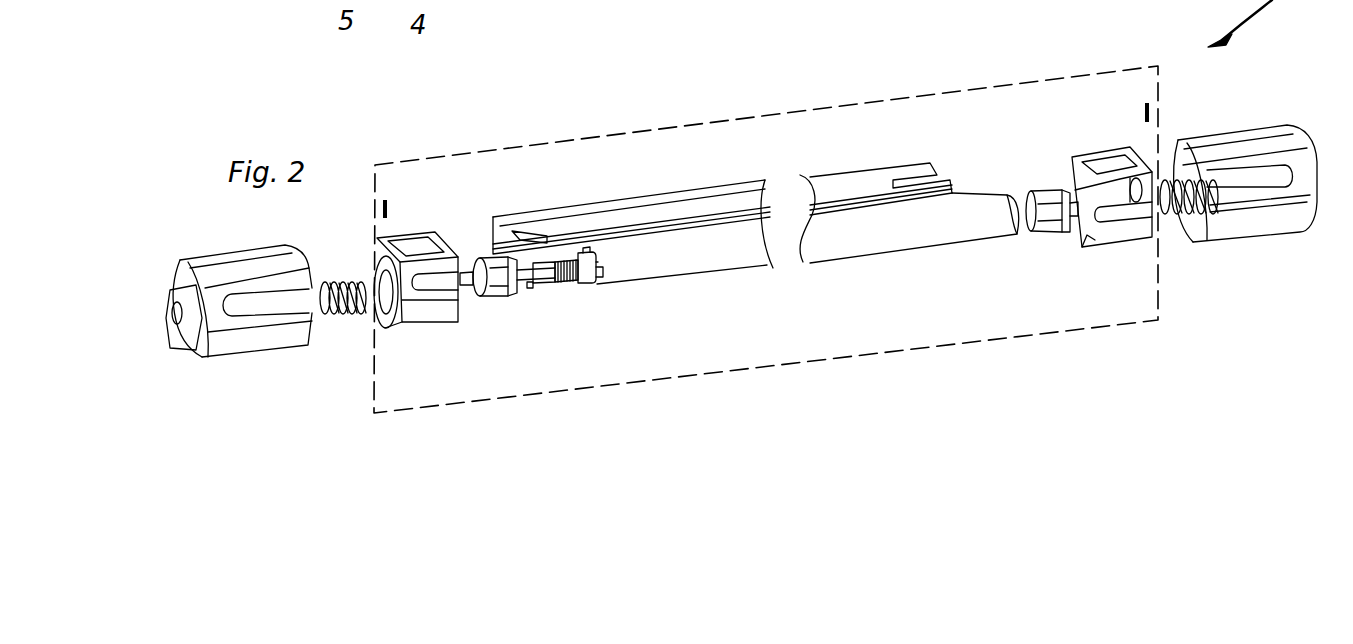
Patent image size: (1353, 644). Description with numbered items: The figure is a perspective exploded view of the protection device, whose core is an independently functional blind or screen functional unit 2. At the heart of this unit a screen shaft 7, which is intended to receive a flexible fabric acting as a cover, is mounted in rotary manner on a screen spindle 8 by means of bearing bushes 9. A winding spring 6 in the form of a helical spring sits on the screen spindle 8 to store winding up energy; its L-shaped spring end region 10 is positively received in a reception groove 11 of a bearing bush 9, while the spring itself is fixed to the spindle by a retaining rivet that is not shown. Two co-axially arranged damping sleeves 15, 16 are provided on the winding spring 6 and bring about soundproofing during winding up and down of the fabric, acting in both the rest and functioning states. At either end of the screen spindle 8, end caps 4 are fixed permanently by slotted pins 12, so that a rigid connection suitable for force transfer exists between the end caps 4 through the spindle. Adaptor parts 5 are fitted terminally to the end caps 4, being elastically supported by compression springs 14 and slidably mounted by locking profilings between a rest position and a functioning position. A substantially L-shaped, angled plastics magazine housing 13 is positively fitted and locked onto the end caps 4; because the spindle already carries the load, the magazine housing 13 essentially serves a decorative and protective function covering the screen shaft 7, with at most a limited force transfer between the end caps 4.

The screen functional unit 2 is at (760, 116).
The end cap 4 is at (422, 317).
The adaptor part 5 is at (241, 340).
The winding spring 6 is at (570, 287).
The screen shaft 7 is at (990, 213).
The screen spindle 8 is at (528, 268).
The bearing bush 9 is at (500, 292).
The spring end region 10 is at (542, 288).
The reception groove 11 is at (477, 306).
The slotted pin 12 is at (390, 209).
The magazine housing 13 is at (672, 214).
The compression spring 14 is at (352, 280).
The damping sleeve 15 is at (543, 270).
The damping sleeve 16 is at (596, 283).